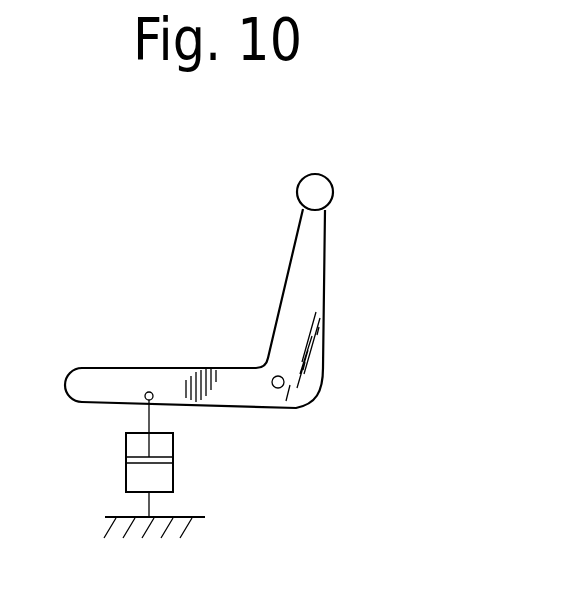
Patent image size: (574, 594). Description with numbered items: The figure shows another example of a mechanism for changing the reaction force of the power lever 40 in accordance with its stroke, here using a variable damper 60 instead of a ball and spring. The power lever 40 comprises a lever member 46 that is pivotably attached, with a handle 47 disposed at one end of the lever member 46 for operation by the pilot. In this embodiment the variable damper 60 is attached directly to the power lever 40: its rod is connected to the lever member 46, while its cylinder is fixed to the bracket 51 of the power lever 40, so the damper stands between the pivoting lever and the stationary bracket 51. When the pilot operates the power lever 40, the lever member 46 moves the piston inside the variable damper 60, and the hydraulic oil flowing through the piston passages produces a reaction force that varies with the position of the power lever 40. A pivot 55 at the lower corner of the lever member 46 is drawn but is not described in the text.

The power lever 40 is at (243, 266).
The lever member 46 is at (322, 305).
The handle 47 is at (318, 192).
The pivot point 55 is at (283, 386).
The variable damper 60 is at (168, 478).
The bracket 51 is at (169, 572).